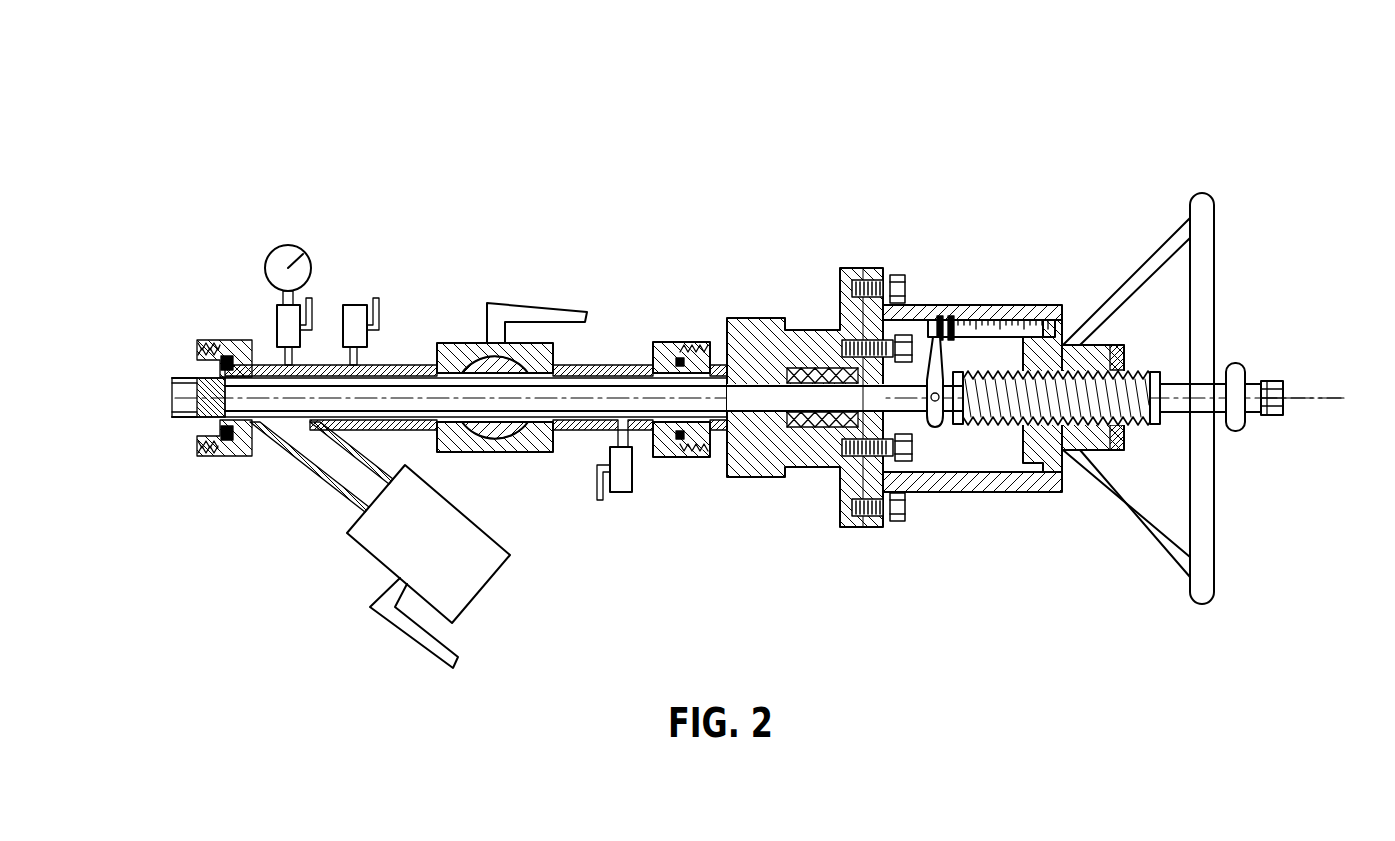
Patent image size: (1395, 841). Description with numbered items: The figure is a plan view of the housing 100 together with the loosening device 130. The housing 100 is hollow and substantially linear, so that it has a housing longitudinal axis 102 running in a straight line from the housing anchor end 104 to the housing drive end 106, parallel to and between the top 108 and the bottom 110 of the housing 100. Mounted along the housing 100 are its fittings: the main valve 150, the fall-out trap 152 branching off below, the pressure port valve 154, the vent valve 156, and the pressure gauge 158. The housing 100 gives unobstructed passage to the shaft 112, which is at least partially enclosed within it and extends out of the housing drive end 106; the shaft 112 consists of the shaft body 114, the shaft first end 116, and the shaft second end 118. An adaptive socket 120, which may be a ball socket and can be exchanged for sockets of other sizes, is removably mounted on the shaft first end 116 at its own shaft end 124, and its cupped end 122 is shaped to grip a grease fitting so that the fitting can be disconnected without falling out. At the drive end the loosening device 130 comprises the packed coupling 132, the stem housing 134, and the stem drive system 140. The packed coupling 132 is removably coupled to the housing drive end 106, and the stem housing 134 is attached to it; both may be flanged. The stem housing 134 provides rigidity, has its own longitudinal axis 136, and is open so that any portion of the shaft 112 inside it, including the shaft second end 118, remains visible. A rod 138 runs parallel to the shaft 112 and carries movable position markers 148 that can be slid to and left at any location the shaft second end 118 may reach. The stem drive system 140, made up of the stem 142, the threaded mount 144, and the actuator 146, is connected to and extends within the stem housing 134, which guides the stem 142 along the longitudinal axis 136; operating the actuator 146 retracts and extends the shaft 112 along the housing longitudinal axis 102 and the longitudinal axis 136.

The housing 100 is at (468, 236).
The housing longitudinal axis 102 is at (1344, 397).
The housing anchor end 104 is at (227, 432).
The housing drive end 106 is at (665, 342).
The top of housing 108 is at (240, 343).
The bottom of housing 110 is at (237, 455).
The shaft 112 is at (630, 393).
The shaft body 114 is at (565, 403).
The shaft first end 116 is at (288, 458).
The shaft second end 118 is at (940, 427).
The adaptive socket 120 is at (178, 378).
The cupped end 122 is at (187, 412).
The shaft end of adaptive socket 124 is at (207, 347).
The loosening device 130 is at (1058, 76).
The packed coupling 132 is at (818, 330).
The stem housing 134 is at (938, 480).
The longitudinal axis 136 is at (1344, 397).
The rod 138 is at (1018, 320).
The stem drive system 140 is at (1147, 630).
The stem 142 is at (1136, 420).
The threaded mount 144 is at (1065, 362).
The actuator 146 is at (1202, 538).
The position markers 148 is at (935, 325).
The main valve 150 is at (472, 343).
The fall-out trap 152 is at (480, 578).
The pressure port valve 154 is at (355, 305).
The vent valve 156 is at (632, 485).
The pressure gauge 158 is at (277, 247).